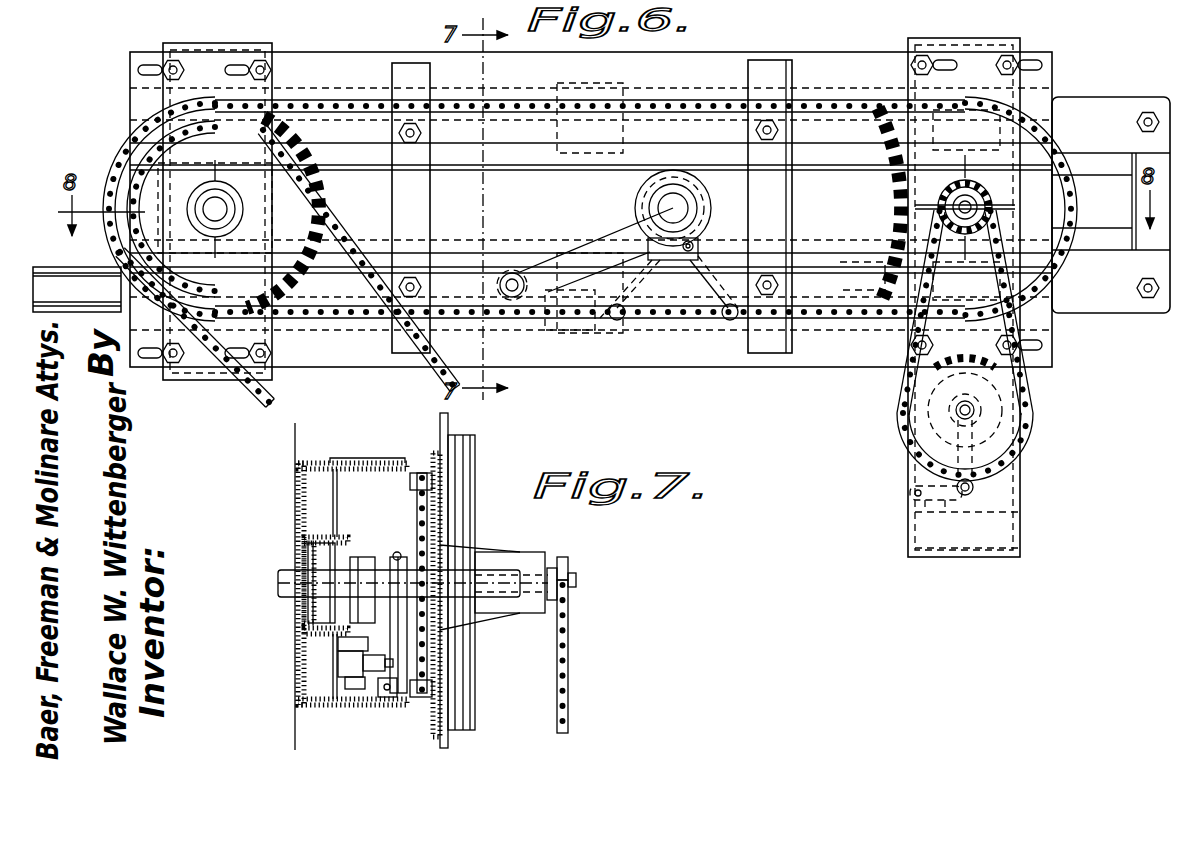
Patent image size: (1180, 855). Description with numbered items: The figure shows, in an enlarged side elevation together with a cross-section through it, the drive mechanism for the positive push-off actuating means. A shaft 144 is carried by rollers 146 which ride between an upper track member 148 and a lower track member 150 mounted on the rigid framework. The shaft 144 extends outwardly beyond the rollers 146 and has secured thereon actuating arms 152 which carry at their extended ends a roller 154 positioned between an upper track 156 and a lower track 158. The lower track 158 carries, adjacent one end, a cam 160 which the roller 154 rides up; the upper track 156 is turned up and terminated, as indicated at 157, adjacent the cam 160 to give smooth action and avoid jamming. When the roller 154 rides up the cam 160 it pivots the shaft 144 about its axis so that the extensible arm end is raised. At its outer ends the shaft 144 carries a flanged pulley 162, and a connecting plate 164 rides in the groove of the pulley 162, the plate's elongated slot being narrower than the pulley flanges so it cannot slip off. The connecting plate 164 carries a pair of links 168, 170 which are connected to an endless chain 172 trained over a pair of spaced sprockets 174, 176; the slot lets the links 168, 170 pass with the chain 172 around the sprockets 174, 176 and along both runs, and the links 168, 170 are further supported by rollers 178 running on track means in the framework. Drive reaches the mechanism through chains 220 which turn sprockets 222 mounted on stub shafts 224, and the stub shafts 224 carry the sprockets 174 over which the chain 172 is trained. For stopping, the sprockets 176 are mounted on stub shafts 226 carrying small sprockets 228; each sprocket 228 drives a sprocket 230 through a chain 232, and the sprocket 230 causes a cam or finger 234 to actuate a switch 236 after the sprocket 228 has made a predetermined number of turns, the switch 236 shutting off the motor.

In FIG. 6, the shaft 144 is at (676, 208).
In FIG. 7, the shaft 144 is at (290, 590).
In FIG. 7, the rollers 146 is at (312, 563).
In FIG. 7, the upper track member 148 is at (322, 545).
In FIG. 7, the lower track member 150 is at (340, 630).
In FIG. 6, the actuating arms 152 is at (613, 218).
In FIG. 7, the actuating arms 152 is at (360, 646).
In FIG. 6, the roller 154 is at (513, 272).
In FIG. 7, the roller 154 is at (352, 672).
In FIG. 6, the upper track 156 is at (472, 270).
In FIG. 7, the upper track 156 is at (352, 661).
In FIG. 6, the turned-up terminated end of upper track 157 is at (694, 254).
In FIG. 6, the lower track 158 is at (566, 330).
In FIG. 7, the lower track 158 is at (348, 690).
In FIG. 6, the cam 160 is at (838, 292).
In FIG. 7, the flanged pulley 162 is at (392, 557).
In FIG. 7, the connecting plate 164 is at (396, 552).
In FIG. 6, the link 168 is at (640, 290).
In FIG. 6, the link 170 is at (737, 304).
In FIG. 6, the endless chain 172 is at (630, 104).
In FIG. 7, the endless chain 172 is at (428, 638).
In FIG. 6, the sprocket 174 is at (300, 214).
In FIG. 6, the sprocket 176 is at (872, 198).
In FIG. 7, the sprocket 176 is at (425, 545).
In FIG. 7, the rollers 178 is at (390, 700).
In FIG. 6, the chains 220 is at (424, 207).
In FIG. 6, the sprockets 222 is at (300, 196).
In FIG. 6, the stub shafts 224 is at (220, 212).
In FIG. 6, the stub shafts 226 is at (972, 203).
In FIG. 7, the stub shafts 226 is at (552, 570).
In FIG. 6, the small sprockets 228 is at (992, 206).
In FIG. 7, the small sprockets 228 is at (566, 566).
In FIG. 6, the sprocket 230 is at (1010, 423).
In FIG. 6, the chain 232 is at (1012, 298).
In FIG. 7, the chain 232 is at (569, 662).
In FIG. 6, the cam or finger 234 is at (1012, 466).
In FIG. 6, the switch 236 is at (906, 507).